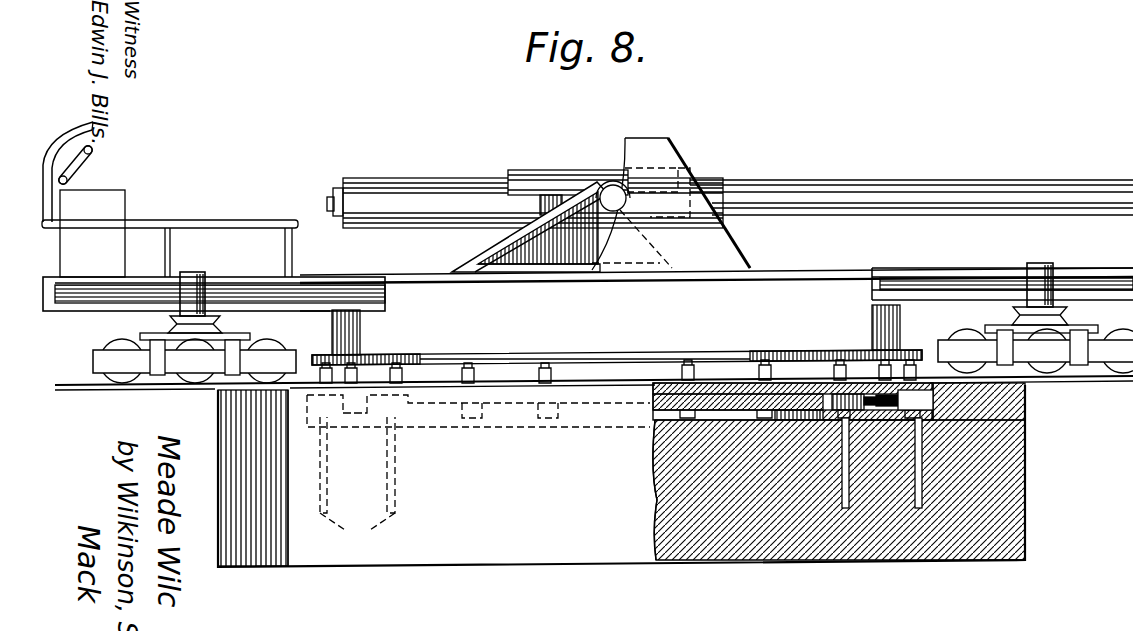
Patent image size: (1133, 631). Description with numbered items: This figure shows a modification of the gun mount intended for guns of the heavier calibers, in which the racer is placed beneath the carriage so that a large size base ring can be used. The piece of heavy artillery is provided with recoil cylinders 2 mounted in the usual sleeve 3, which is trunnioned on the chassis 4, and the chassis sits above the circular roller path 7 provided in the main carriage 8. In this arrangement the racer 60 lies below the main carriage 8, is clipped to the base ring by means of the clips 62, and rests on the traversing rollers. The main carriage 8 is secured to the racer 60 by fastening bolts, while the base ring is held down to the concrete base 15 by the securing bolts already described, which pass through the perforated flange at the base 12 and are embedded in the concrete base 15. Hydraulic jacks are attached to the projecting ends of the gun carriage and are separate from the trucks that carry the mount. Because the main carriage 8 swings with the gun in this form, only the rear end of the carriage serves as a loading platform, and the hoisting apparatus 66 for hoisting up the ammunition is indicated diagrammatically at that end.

The recoil cylinders 2 is at (540, 178).
The sleeve 3 is at (556, 198).
The chassis 4 is at (482, 262).
The circular roller path 7 is at (968, 190).
The main carriage 8 is at (735, 296).
The flange at base 12 is at (652, 358).
The concrete base 15 is at (563, 566).
The racer 60 is at (793, 388).
The clips 62 is at (813, 396).
The hoisting apparatus 66 is at (88, 165).